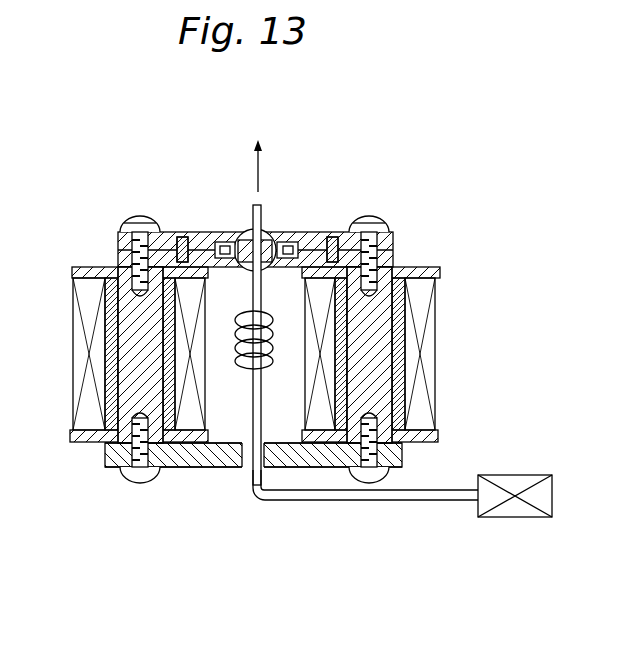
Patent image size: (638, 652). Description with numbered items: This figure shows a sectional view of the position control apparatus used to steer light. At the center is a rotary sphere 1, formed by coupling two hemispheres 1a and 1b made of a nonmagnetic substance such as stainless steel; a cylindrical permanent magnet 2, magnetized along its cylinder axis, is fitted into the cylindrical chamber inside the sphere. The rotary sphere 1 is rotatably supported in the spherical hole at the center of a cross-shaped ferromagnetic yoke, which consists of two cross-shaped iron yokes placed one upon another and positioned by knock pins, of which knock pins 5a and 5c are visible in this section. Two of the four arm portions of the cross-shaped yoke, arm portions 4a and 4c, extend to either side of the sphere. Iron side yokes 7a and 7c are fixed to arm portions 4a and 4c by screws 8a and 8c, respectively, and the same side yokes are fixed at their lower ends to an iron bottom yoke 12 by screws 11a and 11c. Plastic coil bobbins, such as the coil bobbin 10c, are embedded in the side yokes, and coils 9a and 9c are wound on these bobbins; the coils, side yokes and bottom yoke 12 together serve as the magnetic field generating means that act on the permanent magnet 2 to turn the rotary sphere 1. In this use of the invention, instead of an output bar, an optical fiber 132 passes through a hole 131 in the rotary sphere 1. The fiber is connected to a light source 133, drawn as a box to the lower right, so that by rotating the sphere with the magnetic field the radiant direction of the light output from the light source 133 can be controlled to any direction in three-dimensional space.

The rotary sphere 1 is at (246, 220).
The hemisphere 1a is at (240, 232).
The hemisphere 1b is at (243, 271).
The cylindrical permanent magnet 2 is at (269, 271).
The arm portion 4a is at (354, 228).
The arm portion 4c is at (163, 232).
The knock pin 5a is at (332, 237).
The knock pin 5c is at (183, 236).
The side yoke 7a is at (385, 386).
The side yoke 7c is at (120, 340).
The screw 8a is at (388, 223).
The screw 8c is at (134, 220).
The coil 9a is at (433, 328).
The coil 9c is at (78, 306).
The coil bobbin 10c is at (88, 266).
The screw 11a is at (388, 478).
The screw 11c is at (129, 476).
The bottom yoke 12 is at (200, 468).
The hole 131 is at (283, 232).
The optical fiber 132 is at (262, 226).
The light source 133 is at (524, 480).